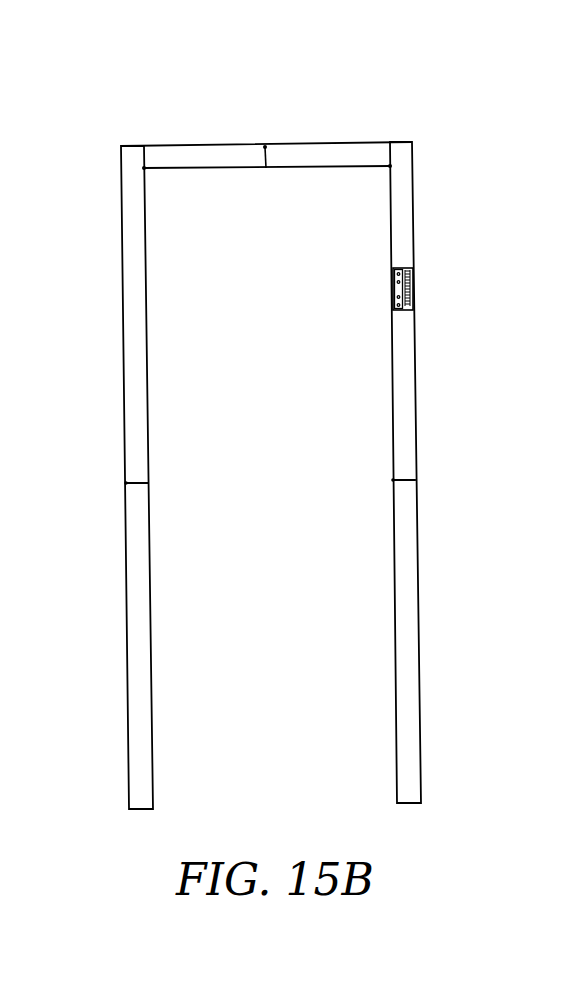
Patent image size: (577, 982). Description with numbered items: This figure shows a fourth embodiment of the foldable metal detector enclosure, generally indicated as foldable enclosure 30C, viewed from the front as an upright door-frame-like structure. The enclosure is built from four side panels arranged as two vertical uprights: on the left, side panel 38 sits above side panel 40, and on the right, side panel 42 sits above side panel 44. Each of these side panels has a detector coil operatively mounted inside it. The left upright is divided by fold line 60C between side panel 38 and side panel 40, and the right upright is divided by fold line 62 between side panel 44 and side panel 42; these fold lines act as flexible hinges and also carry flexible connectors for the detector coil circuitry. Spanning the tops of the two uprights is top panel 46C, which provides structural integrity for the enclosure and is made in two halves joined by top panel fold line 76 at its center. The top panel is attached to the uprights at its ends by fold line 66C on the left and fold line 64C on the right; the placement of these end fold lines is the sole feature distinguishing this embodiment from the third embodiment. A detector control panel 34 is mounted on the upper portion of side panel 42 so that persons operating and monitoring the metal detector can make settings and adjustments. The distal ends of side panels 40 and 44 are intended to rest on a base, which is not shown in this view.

The foldable enclosure 30C is at (266, 433).
The side panel 38 is at (125, 298).
The side panel 40 is at (137, 622).
The fold line 60C is at (126, 483).
The side panel 42 is at (407, 198).
The side panel 44 is at (408, 657).
The fold line 62 is at (395, 480).
The detector control panel 34 is at (410, 273).
The top panel 46C is at (168, 155).
The top panel fold line 76 is at (265, 147).
The fold line 66C is at (145, 170).
The fold line 64C is at (390, 166).